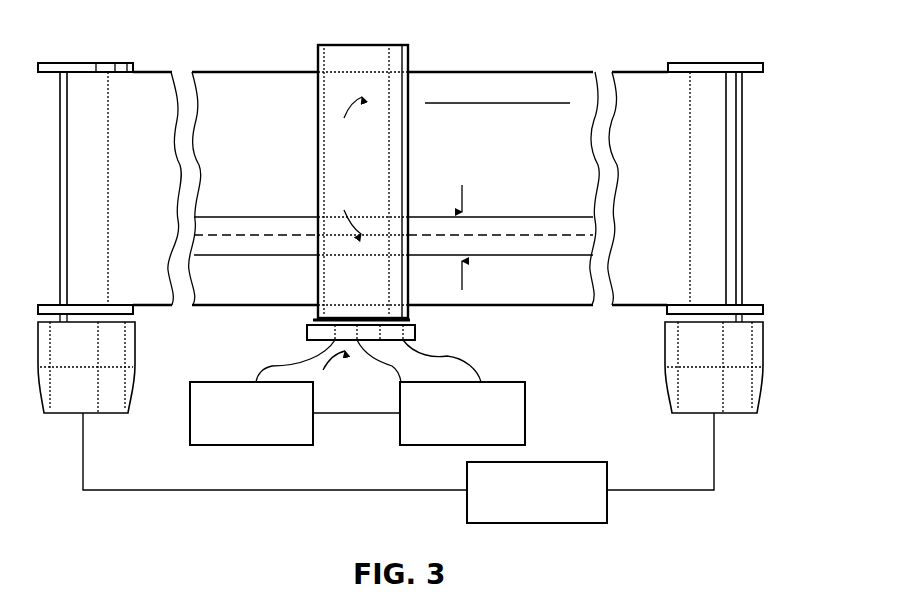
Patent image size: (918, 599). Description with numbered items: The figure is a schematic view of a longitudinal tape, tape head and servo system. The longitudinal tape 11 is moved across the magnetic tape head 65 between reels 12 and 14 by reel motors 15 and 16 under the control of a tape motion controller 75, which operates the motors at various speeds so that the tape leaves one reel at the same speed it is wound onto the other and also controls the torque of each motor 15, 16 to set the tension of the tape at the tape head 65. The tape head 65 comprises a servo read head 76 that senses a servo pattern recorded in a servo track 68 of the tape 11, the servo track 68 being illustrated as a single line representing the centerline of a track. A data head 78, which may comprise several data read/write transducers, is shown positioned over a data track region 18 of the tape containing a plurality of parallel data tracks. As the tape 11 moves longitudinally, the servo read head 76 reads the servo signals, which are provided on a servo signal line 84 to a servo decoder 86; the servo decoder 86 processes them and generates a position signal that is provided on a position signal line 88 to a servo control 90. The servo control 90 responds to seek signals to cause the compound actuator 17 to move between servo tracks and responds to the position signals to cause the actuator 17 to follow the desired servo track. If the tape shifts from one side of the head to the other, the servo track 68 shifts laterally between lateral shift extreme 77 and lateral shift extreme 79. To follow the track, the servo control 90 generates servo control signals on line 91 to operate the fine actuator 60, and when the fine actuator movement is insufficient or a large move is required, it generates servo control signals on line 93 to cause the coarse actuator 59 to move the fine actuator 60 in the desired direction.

The longitudinal tape 11 is at (240, 70).
The reel 12 is at (72, 62).
The reel 14 is at (705, 62).
The reel motor 15 is at (72, 416).
The reel motor 16 is at (727, 417).
The compound actuator 17 is at (318, 367).
The data track region 18 is at (497, 103).
The coarse actuator 59 is at (417, 334).
The fine actuator 60 is at (412, 322).
The magnetic tape head 65 is at (316, 318).
The servo track 68 is at (544, 235).
The tape motion controller 75 is at (608, 505).
The servo read head 76 is at (349, 207).
The lateral shift extreme 77 is at (466, 197).
The data head 78 is at (349, 125).
The lateral shift extreme 79 is at (467, 278).
The servo signal line 84 is at (275, 365).
The servo decoder 86 is at (190, 414).
The position signal line 88 is at (358, 415).
The servo control 90 is at (525, 413).
The servo control signal line 91 is at (388, 370).
The servo control signal line 93 is at (480, 368).